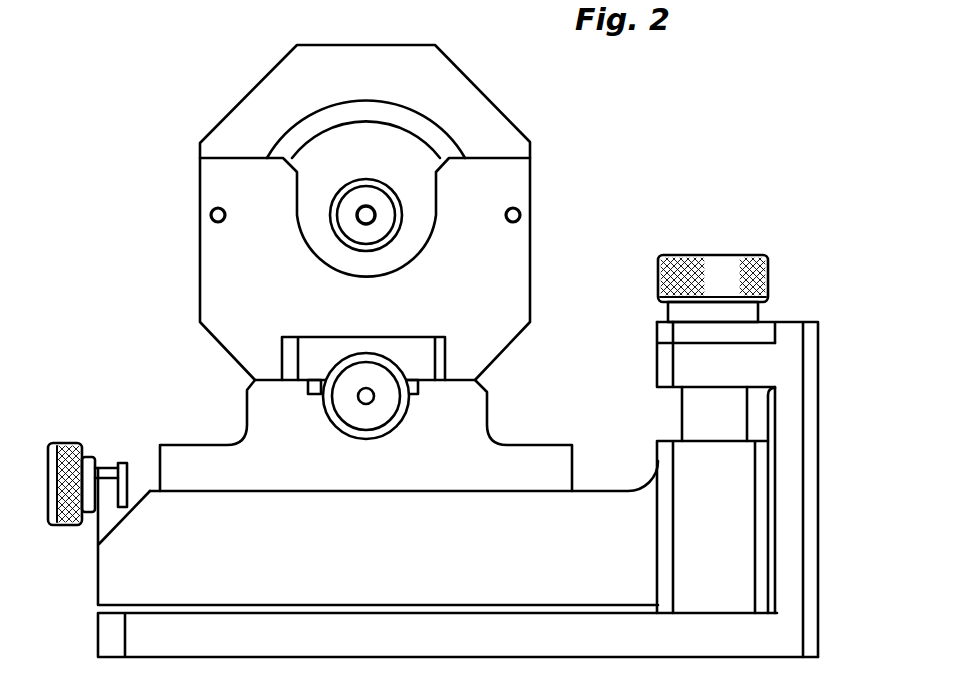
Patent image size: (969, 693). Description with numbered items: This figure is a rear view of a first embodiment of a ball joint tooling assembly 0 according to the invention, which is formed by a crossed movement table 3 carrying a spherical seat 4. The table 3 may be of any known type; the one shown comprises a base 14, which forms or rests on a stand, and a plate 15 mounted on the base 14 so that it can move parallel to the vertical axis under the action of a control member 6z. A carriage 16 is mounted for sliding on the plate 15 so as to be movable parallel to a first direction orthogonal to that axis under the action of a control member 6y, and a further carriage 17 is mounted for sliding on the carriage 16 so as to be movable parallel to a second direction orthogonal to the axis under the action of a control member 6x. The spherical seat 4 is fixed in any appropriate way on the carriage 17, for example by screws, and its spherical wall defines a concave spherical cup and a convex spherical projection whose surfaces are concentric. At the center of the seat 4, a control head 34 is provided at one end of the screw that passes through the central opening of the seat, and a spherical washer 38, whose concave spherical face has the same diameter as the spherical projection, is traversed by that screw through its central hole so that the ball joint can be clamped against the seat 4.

The ball joint tooling assembly 0 is at (172, 118).
The crossed movement table 3 is at (823, 562).
The spherical seat 4 is at (468, 93).
The control member 6x is at (345, 413).
The control member 6y is at (63, 527).
The control member 6z is at (768, 269).
The base 14 is at (720, 642).
The plate 15 is at (168, 579).
The carriage 16 is at (183, 456).
The carriage 17 is at (427, 356).
The control head 34 is at (350, 203).
The spherical washer 38 is at (410, 157).